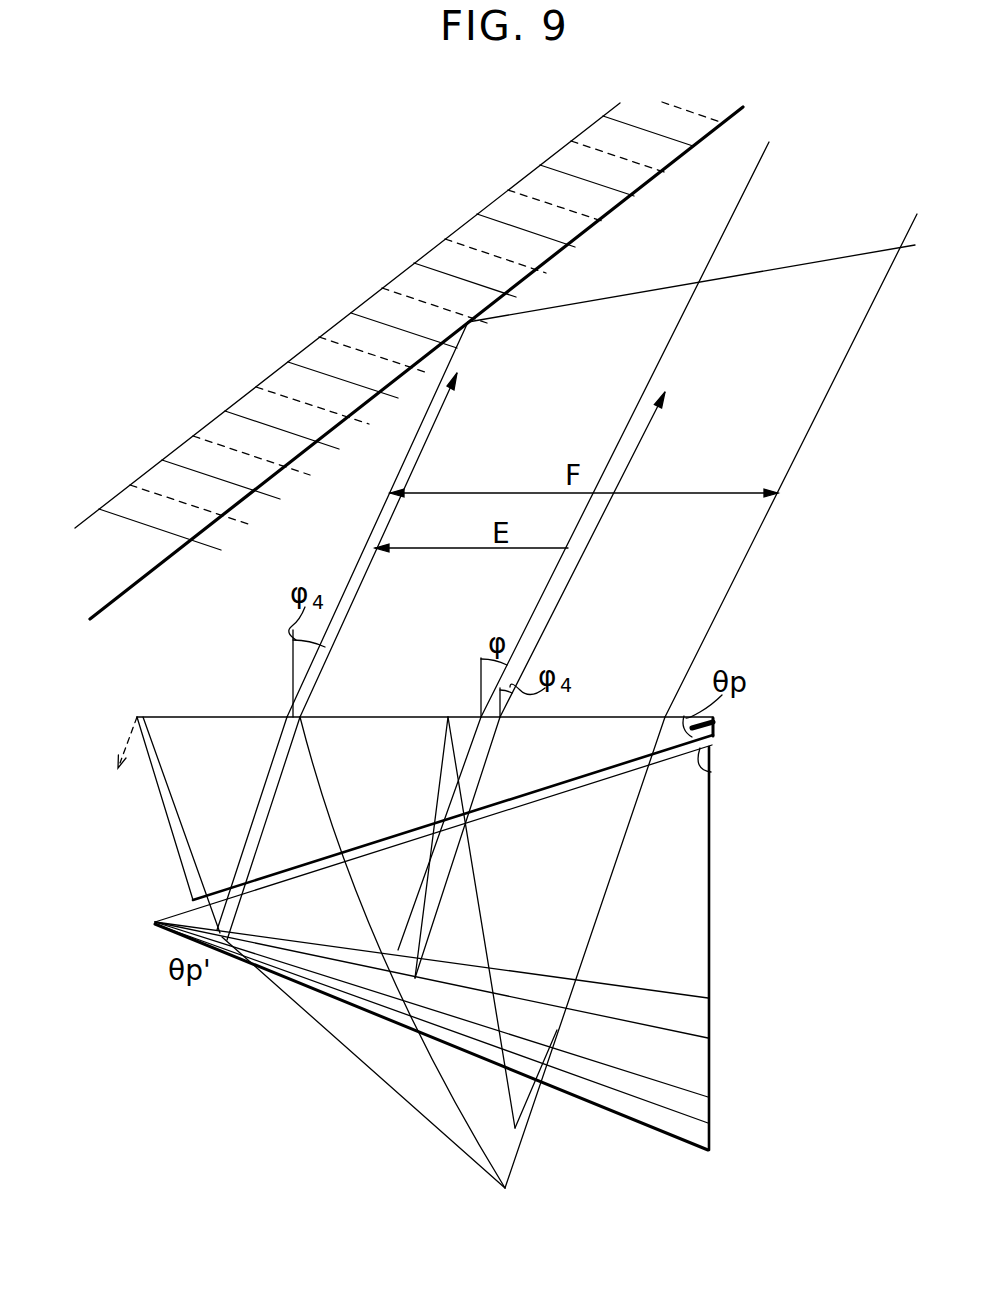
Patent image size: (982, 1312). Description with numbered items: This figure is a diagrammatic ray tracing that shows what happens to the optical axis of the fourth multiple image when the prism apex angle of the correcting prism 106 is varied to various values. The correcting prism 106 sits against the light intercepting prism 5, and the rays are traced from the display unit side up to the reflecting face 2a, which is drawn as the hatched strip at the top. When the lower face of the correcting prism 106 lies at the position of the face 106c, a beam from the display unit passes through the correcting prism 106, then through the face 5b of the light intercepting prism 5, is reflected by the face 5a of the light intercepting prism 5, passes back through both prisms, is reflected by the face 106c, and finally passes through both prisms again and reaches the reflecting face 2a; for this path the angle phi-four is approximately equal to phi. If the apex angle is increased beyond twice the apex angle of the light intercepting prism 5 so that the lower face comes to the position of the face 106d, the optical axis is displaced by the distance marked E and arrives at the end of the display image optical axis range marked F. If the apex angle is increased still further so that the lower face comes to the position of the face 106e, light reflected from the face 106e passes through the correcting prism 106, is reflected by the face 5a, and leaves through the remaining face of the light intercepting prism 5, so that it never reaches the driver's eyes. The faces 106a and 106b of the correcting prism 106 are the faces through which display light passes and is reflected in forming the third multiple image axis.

The reflecting face 2a is at (295, 356).
The light intercepting prism 5 is at (716, 719).
The face of the light intercepting prism 5a is at (582, 717).
The face of the light intercepting prism 5b is at (612, 765).
The correcting prism 106 is at (711, 859).
The face of the correcting prism 106a is at (711, 772).
The face of the correcting prism 106b is at (680, 992).
The face of the correcting prism 106c is at (690, 1037).
The face of the correcting prism 106d is at (702, 1122).
The face of the correcting prism 106e is at (690, 1143).